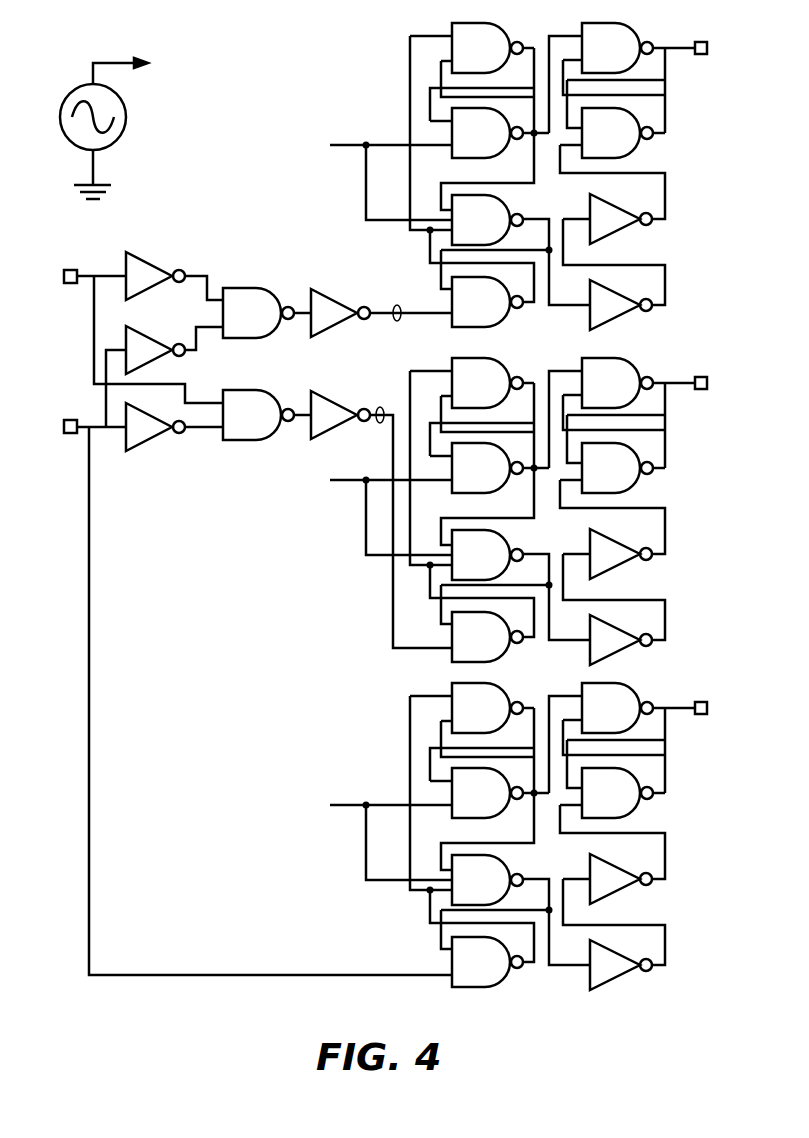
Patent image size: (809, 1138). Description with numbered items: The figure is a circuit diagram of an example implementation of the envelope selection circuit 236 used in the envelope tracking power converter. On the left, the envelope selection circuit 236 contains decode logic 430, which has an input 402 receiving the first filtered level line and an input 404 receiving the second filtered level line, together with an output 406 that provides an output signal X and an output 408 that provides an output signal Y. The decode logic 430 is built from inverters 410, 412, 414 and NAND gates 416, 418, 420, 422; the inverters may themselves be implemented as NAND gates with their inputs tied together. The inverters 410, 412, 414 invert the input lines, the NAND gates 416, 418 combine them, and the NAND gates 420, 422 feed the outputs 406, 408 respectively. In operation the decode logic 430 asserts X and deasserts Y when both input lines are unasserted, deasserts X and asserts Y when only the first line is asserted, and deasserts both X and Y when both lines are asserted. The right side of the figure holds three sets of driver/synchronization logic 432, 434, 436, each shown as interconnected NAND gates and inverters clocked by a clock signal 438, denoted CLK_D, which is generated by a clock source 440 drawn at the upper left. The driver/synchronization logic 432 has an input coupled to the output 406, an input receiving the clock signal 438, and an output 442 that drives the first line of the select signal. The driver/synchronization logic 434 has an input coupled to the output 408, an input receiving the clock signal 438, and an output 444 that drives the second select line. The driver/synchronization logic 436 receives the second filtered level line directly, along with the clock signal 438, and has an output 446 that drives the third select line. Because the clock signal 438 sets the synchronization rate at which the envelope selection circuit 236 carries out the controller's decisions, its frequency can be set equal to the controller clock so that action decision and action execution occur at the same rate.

The envelope selection circuit 236 is at (207, 199).
The input 402 is at (70, 284).
The input 404 is at (70, 420).
The output 406 is at (397, 304).
The output 408 is at (378, 406).
The inverter 410 is at (174, 276).
The inverter 412 is at (174, 350).
The inverter 414 is at (174, 427).
The NAND gate 416 is at (267, 313).
The NAND gate 418 is at (267, 415).
The NAND gate 420 is at (381, 313).
The NAND gate 422 is at (381, 519).
The decode logic 430 is at (240, 267).
The driver/synchronization logic 432 is at (550, 176).
The driver/synchronization logic 434 is at (550, 511).
The driver/synchronization logic 436 is at (550, 836).
The clock signal 438 is at (114, 62).
The clock source 440 is at (127, 116).
The output 442 is at (701, 55).
The output 444 is at (701, 390).
The output 446 is at (701, 715).